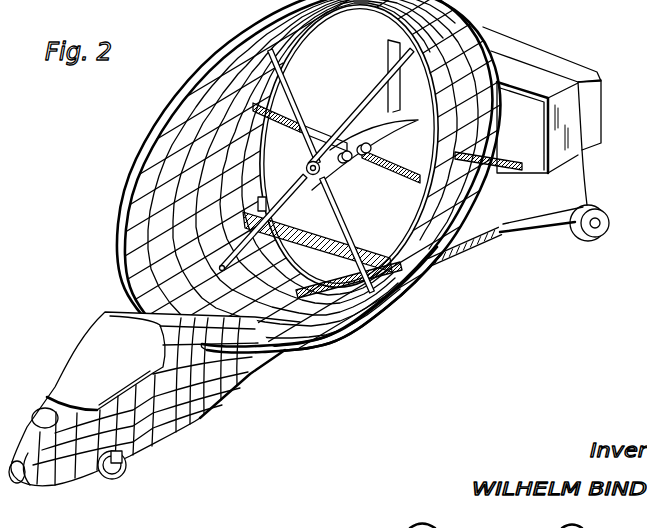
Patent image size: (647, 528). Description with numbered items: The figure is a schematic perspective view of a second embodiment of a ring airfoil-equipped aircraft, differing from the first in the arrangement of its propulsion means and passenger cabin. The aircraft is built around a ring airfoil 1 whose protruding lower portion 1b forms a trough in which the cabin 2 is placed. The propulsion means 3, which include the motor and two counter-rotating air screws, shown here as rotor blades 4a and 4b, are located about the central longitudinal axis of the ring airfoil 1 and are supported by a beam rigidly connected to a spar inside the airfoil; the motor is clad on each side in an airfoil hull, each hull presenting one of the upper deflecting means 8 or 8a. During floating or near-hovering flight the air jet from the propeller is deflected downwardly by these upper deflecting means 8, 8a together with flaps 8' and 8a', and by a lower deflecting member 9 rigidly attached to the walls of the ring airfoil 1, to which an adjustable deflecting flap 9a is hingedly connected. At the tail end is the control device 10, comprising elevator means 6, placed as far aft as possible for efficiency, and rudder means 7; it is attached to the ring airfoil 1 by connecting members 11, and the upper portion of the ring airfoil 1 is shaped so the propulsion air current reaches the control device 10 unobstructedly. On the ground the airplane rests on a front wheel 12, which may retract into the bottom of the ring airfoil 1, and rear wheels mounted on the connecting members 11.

The ring airfoil 1 is at (347, 336).
The protruding lower portion 1b is at (292, 353).
The cabin 2 is at (195, 400).
The propulsion means 3 is at (347, 164).
The rotor blade 4a is at (308, 137).
The rotor blade 4b is at (377, 85).
The elevator means 6 is at (528, 50).
The rudder means 7 is at (593, 110).
The upper deflecting means 8 is at (266, 121).
The upper deflecting means 8a is at (323, 102).
The flap 8' is at (366, 165).
The flap 8a' is at (501, 154).
The lower deflecting member 9 is at (387, 300).
The adjustable deflecting flap 9a is at (363, 250).
The control device 10 is at (520, 97).
The connecting members 11 is at (298, 188).
The front wheel 12 is at (123, 471).